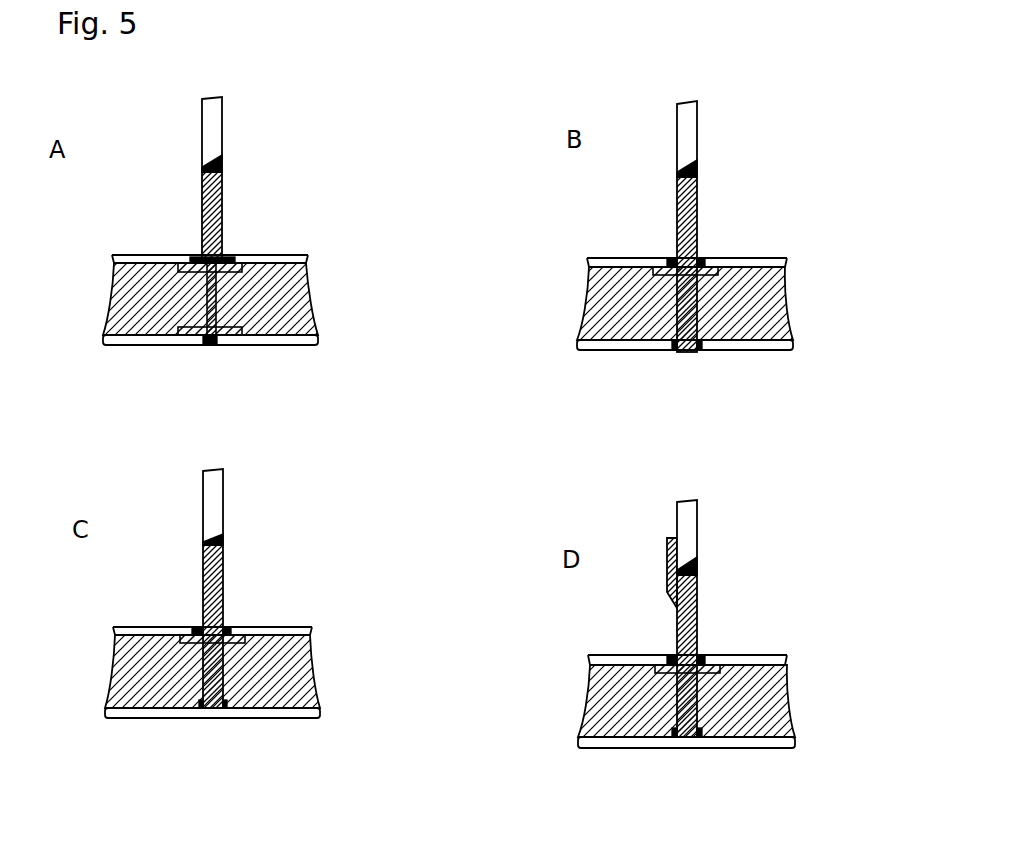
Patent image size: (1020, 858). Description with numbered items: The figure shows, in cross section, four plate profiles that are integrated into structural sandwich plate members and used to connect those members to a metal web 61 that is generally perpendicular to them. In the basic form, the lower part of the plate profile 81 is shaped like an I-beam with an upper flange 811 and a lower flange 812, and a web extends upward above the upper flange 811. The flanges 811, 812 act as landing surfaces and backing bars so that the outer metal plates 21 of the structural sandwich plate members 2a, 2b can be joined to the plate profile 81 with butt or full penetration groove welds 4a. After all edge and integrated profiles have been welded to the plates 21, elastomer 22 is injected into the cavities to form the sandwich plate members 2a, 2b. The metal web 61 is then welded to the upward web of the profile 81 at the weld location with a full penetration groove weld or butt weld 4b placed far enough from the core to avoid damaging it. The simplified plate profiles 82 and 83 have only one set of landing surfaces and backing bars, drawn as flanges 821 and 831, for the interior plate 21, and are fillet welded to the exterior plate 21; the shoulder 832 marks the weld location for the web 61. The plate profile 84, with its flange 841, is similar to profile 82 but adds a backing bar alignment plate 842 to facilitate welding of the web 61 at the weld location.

In FIG. 5A, the structural sandwich plate member 2a is at (77, 282).
In FIG. 5A, the structural sandwich plate member 2b is at (331, 283).
In FIG. 5A, the butt or full penetration groove weld 4a is at (200, 256).
In FIG. 5B, the butt or full penetration groove weld 4a is at (672, 258).
In FIG. 5C, the butt or full penetration groove weld 4a is at (230, 708).
In FIG. 5D, the butt or full penetration groove weld 4a is at (686, 696).
In FIG. 5A, the full penetration groove weld or butt weld 4b is at (222, 168).
In FIG. 5B, the full penetration groove weld or butt weld 4b is at (697, 171).
In FIG. 5D, the full penetration groove weld or butt weld 4b is at (687, 566).
In FIG. 5A, the outer metal plate 21 is at (134, 255).
In FIG. 5B, the outer metal plate 21 is at (605, 258).
In FIG. 5C, the outer metal plate 21 is at (160, 627).
In FIG. 5D, the outer metal plate 21 is at (634, 655).
In FIG. 5A, the elastomer 22 is at (172, 310).
In FIG. 5B, the elastomer 22 is at (638, 313).
In FIG. 5C, the elastomer 22 is at (160, 686).
In FIG. 5D, the elastomer 22 is at (632, 709).
In FIG. 5A, the metal web 61 is at (222, 120).
In FIG. 5B, the metal web 61 is at (697, 118).
In FIG. 5C, the metal web 61 is at (223, 500).
In FIG. 5D, the metal web 61 is at (697, 526).
In FIG. 5A, the plate profile 81 is at (222, 213).
In FIG. 5A, the upper flange 811 is at (240, 272).
In FIG. 5A, the lower flange 812 is at (240, 327).
In FIG. 5B, the plate profile 82 is at (697, 230).
In FIG. 5B, the flange of press-fit portion 821 is at (718, 275).
In FIG. 5C, the plate profile 83 is at (223, 596).
In FIG. 5C, the flange of press-fit portion 831 is at (240, 643).
In FIG. 5C, the shoulder of press-fit portion 832 is at (223, 551).
In FIG. 5D, the plate profile 84 is at (697, 612).
In FIG. 5D, the flange of press-fit portion 841 is at (705, 673).
In FIG. 5D, the backing bar alignment plate 842 is at (667, 570).